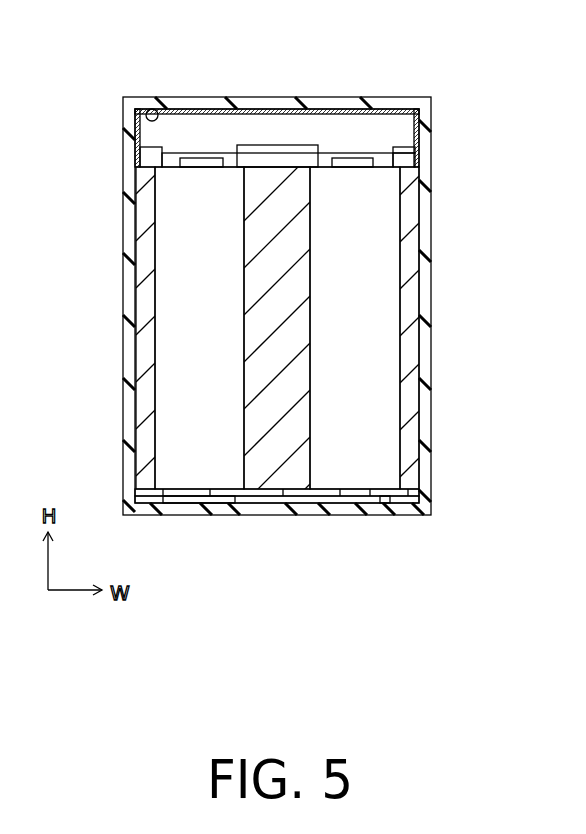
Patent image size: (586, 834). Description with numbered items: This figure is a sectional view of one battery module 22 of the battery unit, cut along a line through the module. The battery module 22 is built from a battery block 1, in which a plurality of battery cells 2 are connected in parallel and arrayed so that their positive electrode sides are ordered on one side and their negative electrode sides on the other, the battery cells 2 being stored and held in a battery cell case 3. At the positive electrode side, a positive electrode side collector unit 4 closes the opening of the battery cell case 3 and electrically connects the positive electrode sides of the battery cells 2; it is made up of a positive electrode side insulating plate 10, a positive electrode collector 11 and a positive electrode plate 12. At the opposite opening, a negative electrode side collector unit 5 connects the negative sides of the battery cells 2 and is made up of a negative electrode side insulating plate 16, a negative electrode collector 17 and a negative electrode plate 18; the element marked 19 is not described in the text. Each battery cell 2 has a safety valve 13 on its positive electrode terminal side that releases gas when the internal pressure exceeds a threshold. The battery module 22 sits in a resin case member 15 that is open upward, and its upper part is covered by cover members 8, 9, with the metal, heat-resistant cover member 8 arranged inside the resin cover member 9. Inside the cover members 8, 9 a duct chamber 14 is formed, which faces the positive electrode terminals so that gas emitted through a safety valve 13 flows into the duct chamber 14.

The battery block 1 is at (268, 143).
The battery cell 2 is at (170, 418).
The battery cell case 3 is at (146, 298).
The positive electrode side collector unit 4 is at (327, 149).
The negative electrode side collector unit 5 is at (324, 533).
The cover member 8 is at (150, 108).
The cover member 9 is at (134, 145).
The positive electrode side insulating plate 10 is at (438, 174).
The positive electrode collector 11 is at (417, 150).
The positive electrode plate 12 is at (380, 154).
The safety valve 13 is at (200, 162).
The duct chamber 14 is at (185, 120).
The case member 15 is at (124, 360).
The negative electrode side insulating plate 16 is at (418, 491).
The negative electrode collector 17 is at (383, 506).
The negative electrode plate 18 is at (400, 500).
The bottom connection portion 19 is at (205, 501).
The battery module 22 is at (360, 78).